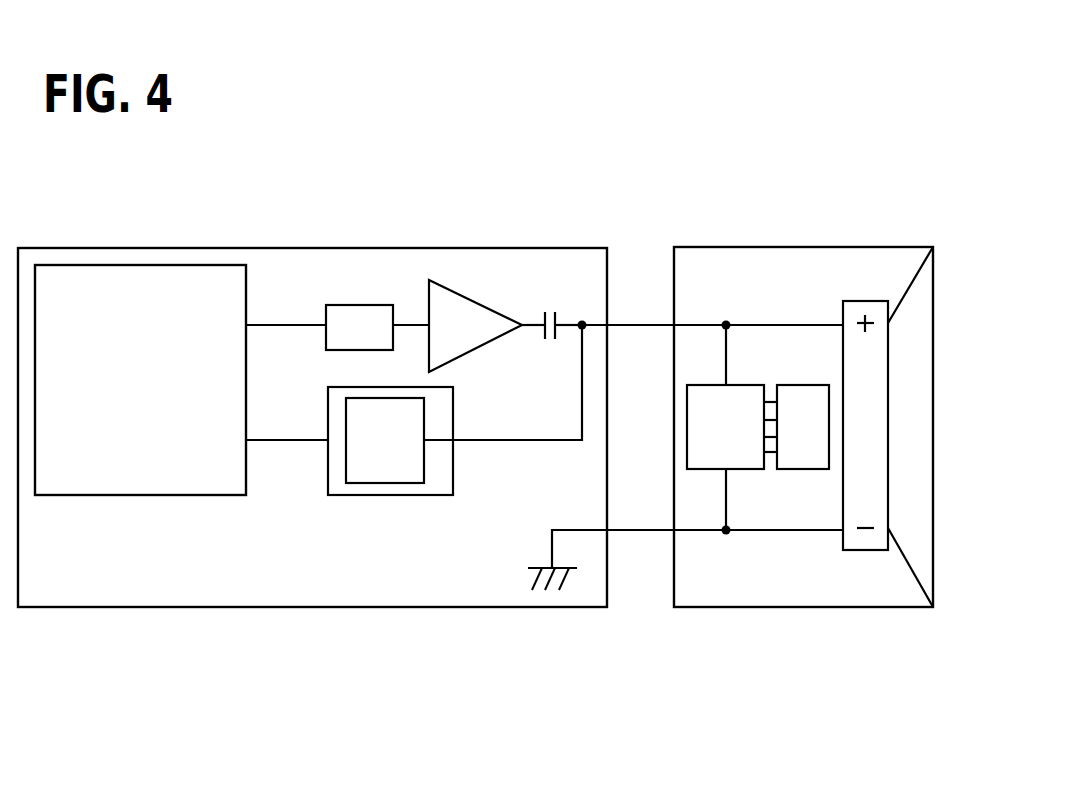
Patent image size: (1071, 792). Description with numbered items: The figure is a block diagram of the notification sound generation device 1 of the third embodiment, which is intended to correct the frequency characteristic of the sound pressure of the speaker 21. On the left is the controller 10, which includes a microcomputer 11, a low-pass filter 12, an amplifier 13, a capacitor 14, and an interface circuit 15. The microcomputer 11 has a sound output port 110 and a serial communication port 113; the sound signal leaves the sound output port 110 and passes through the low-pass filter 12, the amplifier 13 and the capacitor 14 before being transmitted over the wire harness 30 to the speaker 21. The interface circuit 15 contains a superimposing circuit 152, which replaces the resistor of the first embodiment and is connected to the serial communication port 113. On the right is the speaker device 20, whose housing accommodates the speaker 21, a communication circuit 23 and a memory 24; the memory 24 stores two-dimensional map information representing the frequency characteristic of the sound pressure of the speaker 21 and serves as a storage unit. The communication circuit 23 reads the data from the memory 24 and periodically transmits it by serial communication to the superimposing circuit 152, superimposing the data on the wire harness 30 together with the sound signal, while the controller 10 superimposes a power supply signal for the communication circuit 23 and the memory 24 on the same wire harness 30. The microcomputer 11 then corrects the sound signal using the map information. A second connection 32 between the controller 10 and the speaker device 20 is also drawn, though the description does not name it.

The notification sound generation device 1 is at (524, 199).
The controller 10 is at (65, 249).
The microcomputer 11 is at (220, 265).
The low-pass filter 12 is at (345, 305).
The amplifier 13 is at (476, 303).
The capacitor 14 is at (557, 312).
The interface circuit 15 is at (435, 496).
The speaker device 20 is at (850, 246).
The speaker 21 is at (907, 290).
The communication circuit 23 is at (705, 470).
The memory 24 is at (797, 470).
The wire harness 30 is at (643, 323).
The second wiring (ground) 32 is at (645, 530).
The sound output port 110 is at (250, 322).
The serial communication port 113 is at (250, 438).
The superimposing circuit 152 is at (357, 485).